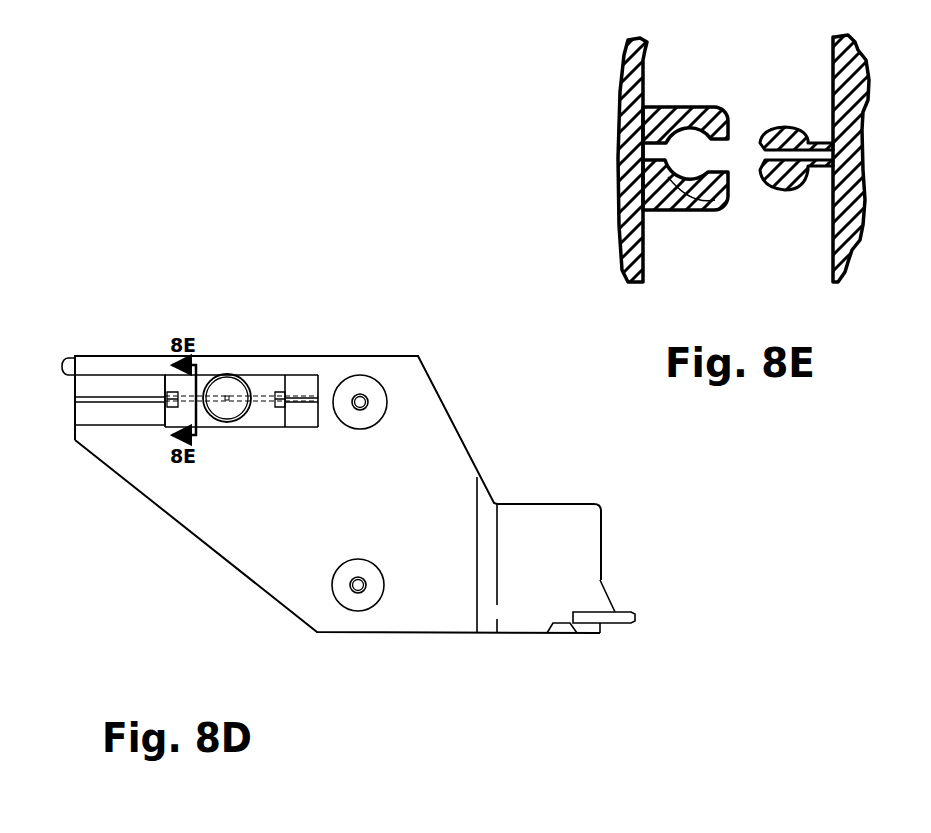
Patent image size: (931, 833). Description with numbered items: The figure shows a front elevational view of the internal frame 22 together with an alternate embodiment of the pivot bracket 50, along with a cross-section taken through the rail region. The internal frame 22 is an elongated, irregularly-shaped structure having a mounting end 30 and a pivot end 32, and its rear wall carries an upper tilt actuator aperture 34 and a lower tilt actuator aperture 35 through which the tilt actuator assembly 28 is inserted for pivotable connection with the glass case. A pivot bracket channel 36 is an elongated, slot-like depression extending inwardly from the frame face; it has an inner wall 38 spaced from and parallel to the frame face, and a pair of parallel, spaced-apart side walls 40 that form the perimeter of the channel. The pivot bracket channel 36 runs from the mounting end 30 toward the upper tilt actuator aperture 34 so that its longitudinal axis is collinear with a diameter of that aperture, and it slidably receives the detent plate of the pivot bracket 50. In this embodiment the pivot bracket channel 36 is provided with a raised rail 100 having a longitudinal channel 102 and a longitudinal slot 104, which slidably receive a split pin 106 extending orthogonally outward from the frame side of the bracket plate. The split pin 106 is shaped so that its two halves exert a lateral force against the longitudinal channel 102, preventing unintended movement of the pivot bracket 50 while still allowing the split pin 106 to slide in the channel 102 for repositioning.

In FIG. 8D, the internal frame 22 is at (563, 500).
In FIG. 8D, the tilt actuator assembly 28 is at (357, 398).
In FIG. 8D, the mounting end 30 is at (88, 472).
In FIG. 8D, the pivot end 32 is at (613, 626).
In FIG. 8D, the upper tilt actuator aperture 34 is at (377, 380).
In FIG. 8D, the lower tilt actuator aperture 35 is at (352, 605).
In FIG. 8D, the pivot bracket channel 36 is at (158, 372).
In FIG. 8D, the inner wall 38 is at (128, 393).
In FIG. 8D, the side walls 40 is at (94, 378).
In FIG. 8D, the pivot bracket 50 is at (237, 377).
In FIG. 8D, the raised rail 100 is at (92, 402).
In FIG. 8E, the raised rail 100 is at (697, 108).
In FIG. 8E, the longitudinal channel 102 is at (685, 193).
In FIG. 8E, the longitudinal slot 104 is at (720, 150).
In FIG. 8D, the split pin 106 is at (229, 354).
In FIG. 8E, the split pin 106 is at (780, 180).